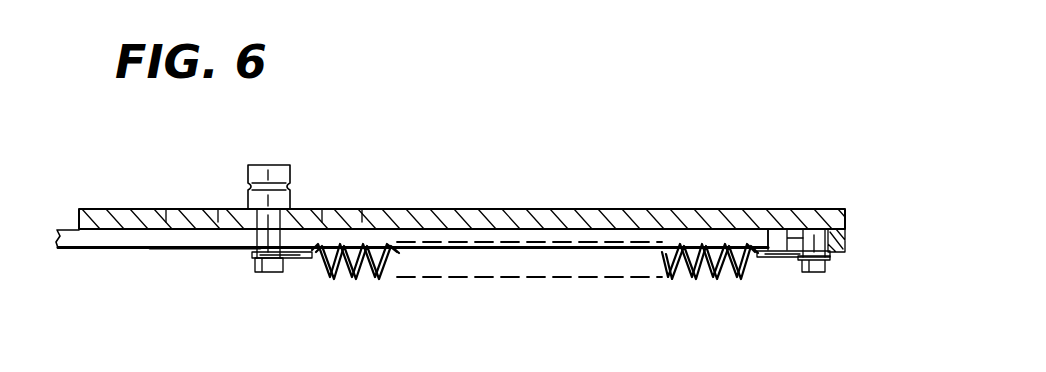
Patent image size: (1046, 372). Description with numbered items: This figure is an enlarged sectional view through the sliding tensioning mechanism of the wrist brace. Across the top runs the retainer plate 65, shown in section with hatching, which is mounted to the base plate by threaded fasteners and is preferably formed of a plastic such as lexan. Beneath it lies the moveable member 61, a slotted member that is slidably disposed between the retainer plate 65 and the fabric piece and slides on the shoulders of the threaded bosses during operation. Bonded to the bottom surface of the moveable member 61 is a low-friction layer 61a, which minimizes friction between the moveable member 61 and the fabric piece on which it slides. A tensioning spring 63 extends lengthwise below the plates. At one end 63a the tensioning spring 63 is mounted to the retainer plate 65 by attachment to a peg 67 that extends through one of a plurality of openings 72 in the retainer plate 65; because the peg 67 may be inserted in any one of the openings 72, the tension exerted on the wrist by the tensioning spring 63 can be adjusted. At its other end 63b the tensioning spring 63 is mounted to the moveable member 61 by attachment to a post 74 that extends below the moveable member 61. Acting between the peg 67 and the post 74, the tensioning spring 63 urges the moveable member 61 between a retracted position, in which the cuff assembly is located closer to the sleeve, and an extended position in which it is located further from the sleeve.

The moveable member 61 is at (125, 240).
The low-friction layer 61a is at (203, 249).
The tensioning spring 63 is at (377, 273).
The one end of tensioning spring 63a is at (302, 262).
The other end of tensioning spring 63b is at (778, 260).
The retainer plate 65 is at (547, 211).
The peg 67 is at (272, 178).
The openings 72 is at (218, 211).
The post 74 is at (845, 238).